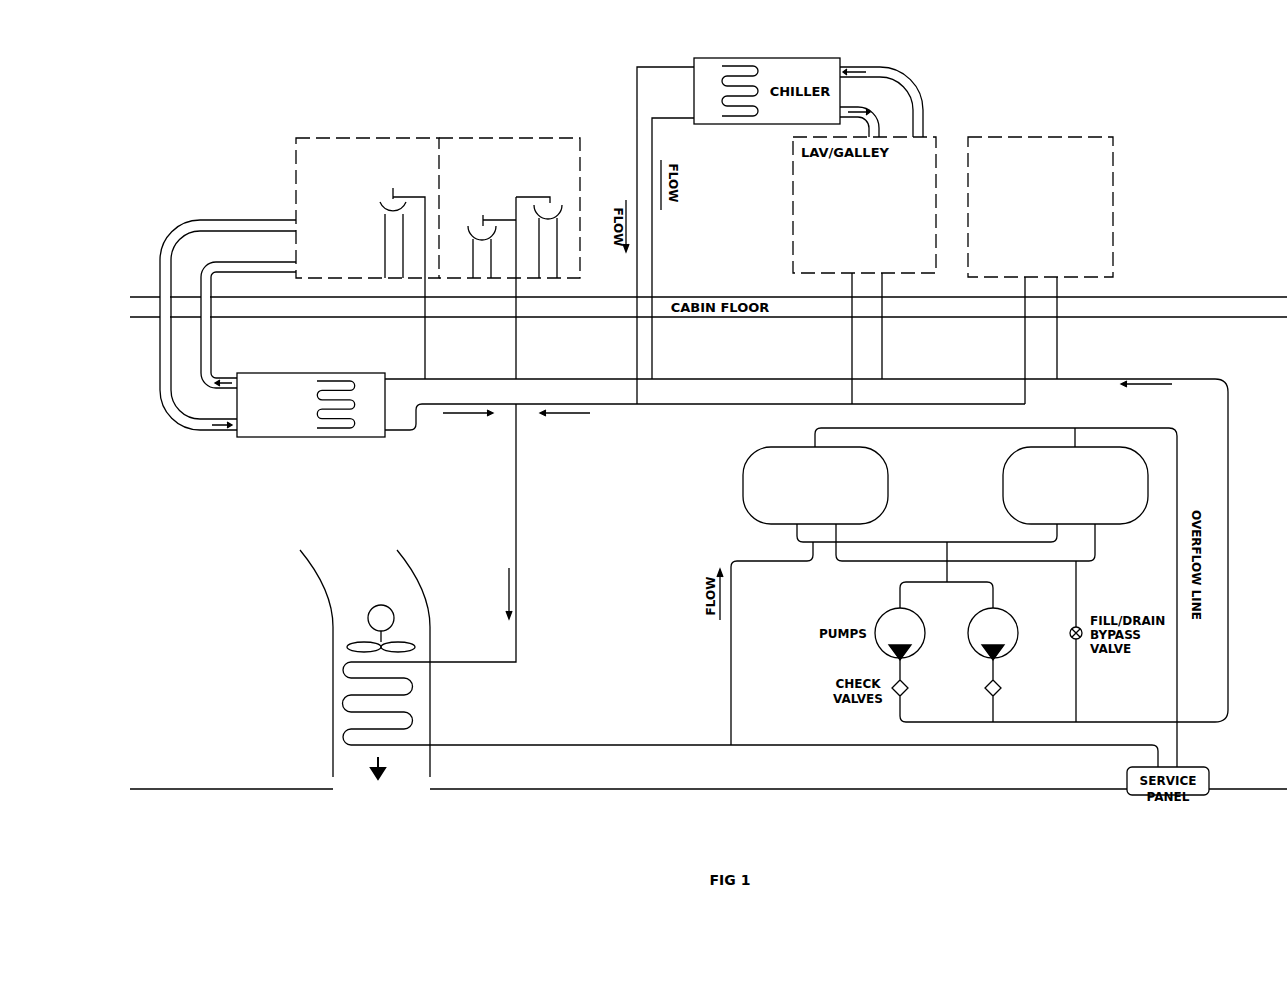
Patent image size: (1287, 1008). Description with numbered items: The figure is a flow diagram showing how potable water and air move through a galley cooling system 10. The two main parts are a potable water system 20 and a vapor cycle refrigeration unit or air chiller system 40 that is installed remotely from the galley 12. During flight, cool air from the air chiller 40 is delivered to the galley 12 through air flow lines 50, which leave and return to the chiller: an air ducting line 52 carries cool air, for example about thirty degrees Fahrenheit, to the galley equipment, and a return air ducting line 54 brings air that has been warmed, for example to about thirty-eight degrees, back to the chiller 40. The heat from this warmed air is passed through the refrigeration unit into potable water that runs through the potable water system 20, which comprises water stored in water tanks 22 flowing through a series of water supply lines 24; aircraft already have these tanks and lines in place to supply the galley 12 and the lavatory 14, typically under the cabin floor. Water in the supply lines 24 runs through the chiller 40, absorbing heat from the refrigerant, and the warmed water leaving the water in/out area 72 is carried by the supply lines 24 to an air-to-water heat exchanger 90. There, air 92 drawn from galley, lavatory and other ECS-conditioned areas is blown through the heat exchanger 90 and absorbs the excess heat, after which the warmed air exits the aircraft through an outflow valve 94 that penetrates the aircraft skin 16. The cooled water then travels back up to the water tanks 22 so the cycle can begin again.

The galley cooling system 10 is at (1053, 124).
The galley 12 is at (370, 138).
The lavatory 14 is at (513, 138).
The aircraft skin 16 is at (918, 793).
The potable water system 20 is at (923, 485).
The water tank 22 is at (888, 483).
The water supply line 24 is at (808, 550).
The air chiller system 40 is at (245, 440).
The air flow lines 50 is at (205, 308).
The air ducting line 52 is at (260, 262).
The return air ducting line 54 is at (220, 218).
The water in/out area 72 is at (396, 438).
The air-to-water heat exchanger 90 is at (292, 633).
The air 92 is at (368, 550).
The outflow valve 94 is at (380, 832).